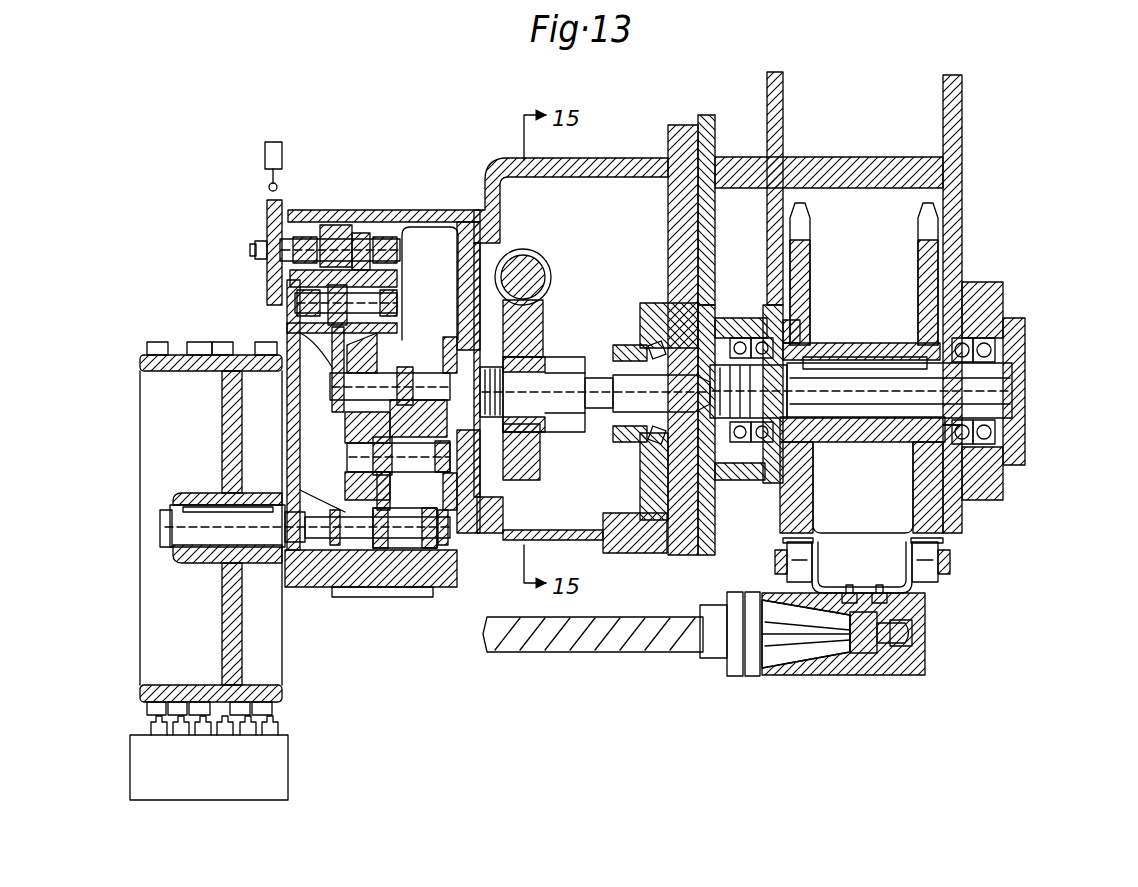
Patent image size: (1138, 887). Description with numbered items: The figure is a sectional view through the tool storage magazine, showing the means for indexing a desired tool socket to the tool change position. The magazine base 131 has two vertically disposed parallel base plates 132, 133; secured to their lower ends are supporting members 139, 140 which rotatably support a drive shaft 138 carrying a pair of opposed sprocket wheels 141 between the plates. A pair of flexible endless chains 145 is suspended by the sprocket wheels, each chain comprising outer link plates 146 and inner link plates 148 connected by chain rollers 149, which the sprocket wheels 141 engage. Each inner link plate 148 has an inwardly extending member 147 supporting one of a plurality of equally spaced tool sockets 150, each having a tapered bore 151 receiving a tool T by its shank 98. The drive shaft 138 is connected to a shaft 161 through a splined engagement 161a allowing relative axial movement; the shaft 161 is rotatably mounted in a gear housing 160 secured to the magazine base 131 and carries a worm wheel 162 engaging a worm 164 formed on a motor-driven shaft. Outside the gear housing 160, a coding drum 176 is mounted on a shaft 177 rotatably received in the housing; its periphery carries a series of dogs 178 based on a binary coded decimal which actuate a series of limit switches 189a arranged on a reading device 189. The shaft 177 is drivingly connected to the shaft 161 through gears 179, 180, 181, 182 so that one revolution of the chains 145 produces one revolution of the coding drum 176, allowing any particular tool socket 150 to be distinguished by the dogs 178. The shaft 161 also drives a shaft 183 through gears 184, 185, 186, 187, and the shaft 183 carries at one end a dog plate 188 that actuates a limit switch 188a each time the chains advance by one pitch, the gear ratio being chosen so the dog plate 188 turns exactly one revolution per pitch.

The shank 98 is at (830, 663).
The magazine base 131 is at (765, 95).
The base plate 132 is at (783, 128).
The base plate 133 is at (962, 130).
The drive shaft 138 is at (869, 402).
The supporting member 139 is at (740, 305).
The supporting member 140 is at (1000, 286).
The sprocket wheel 141 is at (810, 270).
The flexible endless chain 145 is at (774, 574).
The outer link plate 146 is at (787, 560).
The inwardly extending member 147 is at (857, 590).
The inner link plate 148 is at (878, 579).
The chain roller 149 is at (803, 549).
The tool socket 150 is at (886, 668).
The tapered bore 151 is at (800, 670).
The gear housing 160 is at (605, 171).
The shaft 161 is at (606, 427).
The splined engagement 161a is at (625, 432).
The worm wheel 162 is at (542, 324).
The worm 164 is at (540, 265).
The coding drum 176 is at (175, 345).
The shaft 177 is at (355, 560).
The dog 178 is at (225, 345).
The gear 179 is at (392, 585).
The gear 180 is at (385, 468).
The gear 181 is at (460, 540).
The gear 182 is at (407, 380).
The shaft 183 is at (345, 235).
The gear 184 is at (332, 432).
The gear 185 is at (335, 330).
The gear 186 is at (385, 284).
The gear 187 is at (363, 240).
The dog plate 188 is at (267, 217).
The limit switch 188a is at (270, 142).
The reading device 189 is at (276, 766).
The limit switch 189a is at (266, 724).
The tool T is at (596, 648).